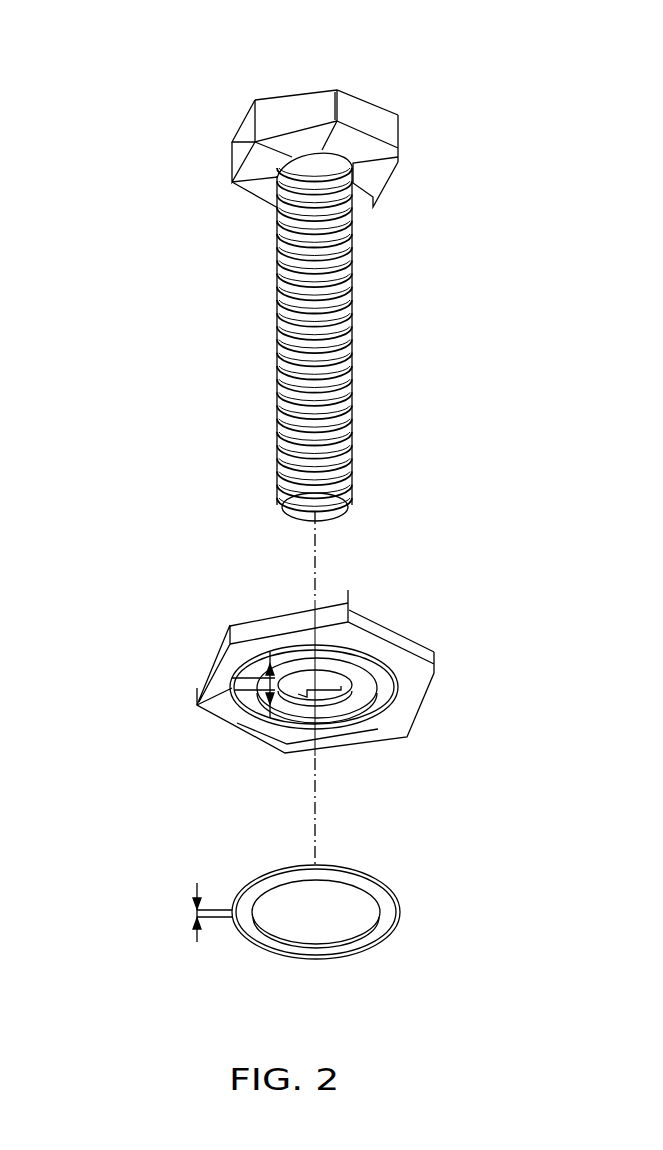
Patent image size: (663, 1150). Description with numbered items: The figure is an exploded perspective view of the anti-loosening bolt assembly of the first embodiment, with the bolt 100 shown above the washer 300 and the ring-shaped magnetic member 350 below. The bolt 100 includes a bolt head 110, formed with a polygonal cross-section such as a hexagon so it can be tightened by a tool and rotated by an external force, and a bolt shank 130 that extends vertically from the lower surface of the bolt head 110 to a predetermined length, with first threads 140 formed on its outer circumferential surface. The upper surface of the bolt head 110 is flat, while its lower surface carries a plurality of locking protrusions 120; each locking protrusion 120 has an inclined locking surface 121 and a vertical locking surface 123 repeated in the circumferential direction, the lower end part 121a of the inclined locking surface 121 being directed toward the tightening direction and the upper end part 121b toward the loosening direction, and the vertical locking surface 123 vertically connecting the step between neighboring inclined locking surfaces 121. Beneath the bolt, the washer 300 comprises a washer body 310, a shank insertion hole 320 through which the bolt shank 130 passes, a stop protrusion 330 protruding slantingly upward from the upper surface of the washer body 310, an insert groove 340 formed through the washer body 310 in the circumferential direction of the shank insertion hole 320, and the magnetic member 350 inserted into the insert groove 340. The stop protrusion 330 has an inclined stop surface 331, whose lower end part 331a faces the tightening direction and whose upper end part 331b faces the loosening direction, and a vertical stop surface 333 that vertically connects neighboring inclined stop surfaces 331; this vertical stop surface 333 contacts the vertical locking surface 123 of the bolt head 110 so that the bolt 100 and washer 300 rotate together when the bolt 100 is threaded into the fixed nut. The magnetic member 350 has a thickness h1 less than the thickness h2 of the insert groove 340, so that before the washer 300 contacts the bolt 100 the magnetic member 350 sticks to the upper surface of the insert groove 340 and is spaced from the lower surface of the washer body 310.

The bolt 100 is at (147, 278).
The bolt head 110 is at (365, 105).
The locking protrusions 120 is at (480, 118).
The inclined locking surface 121 is at (363, 147).
The lower end part of the inclined locking surface 121a is at (250, 143).
The upper end part of the inclined locking surface 121b is at (337, 118).
The vertical locking surface 123 is at (393, 157).
The bolt shank 130 is at (292, 512).
The first threads 140 is at (352, 298).
The washer 300 is at (202, 613).
The washer body 310 is at (217, 678).
The shank insertion hole 320 is at (240, 724).
The stop protrusion 330 is at (480, 580).
The inclined stop surface 331 is at (350, 598).
The lower end part of the inclined stop surface 331a is at (262, 598).
The upper end part of the inclined stop surface 331b is at (332, 608).
The vertical stop surface 333 is at (352, 615).
The insert groove 340 is at (397, 703).
The magnetic member 350 is at (405, 913).
The thickness of the magnetic member h1 is at (195, 912).
The thickness of the insert groove h2 is at (196, 704).